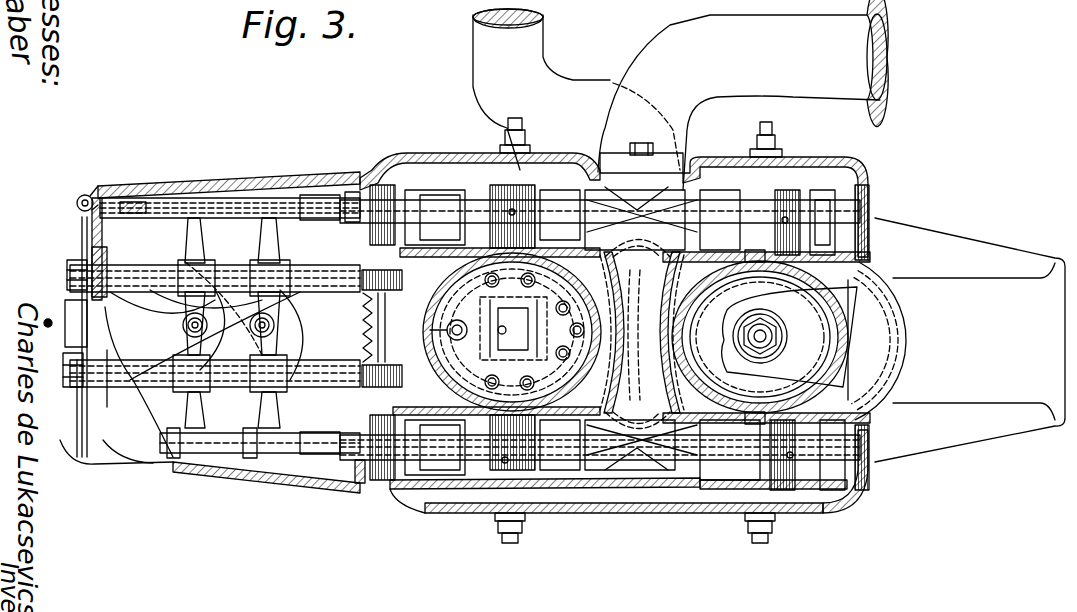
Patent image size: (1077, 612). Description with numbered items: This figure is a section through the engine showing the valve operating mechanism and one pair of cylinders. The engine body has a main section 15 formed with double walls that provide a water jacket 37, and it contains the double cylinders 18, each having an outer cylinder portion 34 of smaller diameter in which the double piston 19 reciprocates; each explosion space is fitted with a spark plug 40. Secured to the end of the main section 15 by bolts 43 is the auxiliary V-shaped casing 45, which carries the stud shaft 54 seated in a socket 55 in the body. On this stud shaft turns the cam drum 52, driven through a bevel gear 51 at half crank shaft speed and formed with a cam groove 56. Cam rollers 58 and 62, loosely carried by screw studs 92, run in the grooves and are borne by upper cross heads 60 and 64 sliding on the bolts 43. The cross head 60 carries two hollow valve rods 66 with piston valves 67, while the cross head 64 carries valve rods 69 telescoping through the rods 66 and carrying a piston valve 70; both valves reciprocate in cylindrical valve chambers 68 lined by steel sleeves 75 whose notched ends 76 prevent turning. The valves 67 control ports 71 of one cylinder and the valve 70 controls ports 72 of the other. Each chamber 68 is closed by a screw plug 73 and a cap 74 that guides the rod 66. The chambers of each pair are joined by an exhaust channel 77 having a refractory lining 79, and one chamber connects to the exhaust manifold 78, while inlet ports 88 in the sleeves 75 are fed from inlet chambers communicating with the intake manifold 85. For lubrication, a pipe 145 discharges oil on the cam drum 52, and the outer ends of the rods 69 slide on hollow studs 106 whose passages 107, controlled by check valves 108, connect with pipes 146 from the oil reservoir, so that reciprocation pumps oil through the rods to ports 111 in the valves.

The main portion or section 15 is at (852, 165).
The double cylinders 18 is at (774, 337).
The double piston 19 is at (775, 388).
The outer cylinder portion 34 is at (733, 340).
The water jacket 37 is at (460, 160).
The spark plug 40 is at (506, 130).
The bolts 43 is at (90, 268).
The auxiliary V-shaped casing 45 is at (202, 470).
The bevel gear 51 is at (160, 342).
The cam drum 52 is at (215, 382).
The stud shaft 54 is at (66, 305).
The socket 55 is at (414, 328).
The cam groove 56 is at (222, 272).
The cam roller 58 is at (276, 325).
The upper cross head 60 is at (274, 256).
The cam roller 62 is at (208, 316).
The upper cross head 64 is at (187, 238).
The hollow valve rods 66 is at (308, 197).
The piston valves 67 is at (522, 195).
The cylindrical valve chambers 68 is at (690, 195).
The valve rods 69 is at (225, 200).
The piston valve 70 is at (792, 220).
The ports 71 is at (510, 262).
The ports 72 is at (755, 263).
The screw plug or cap 73 is at (870, 205).
The screw plug or cap 74 is at (385, 190).
The steel liners or sleeves 75 is at (563, 195).
The notched ends 76 is at (616, 155).
The exhaust channel or passage 77 is at (742, 362).
The exhaust manifold 78 is at (650, 52).
The lining 79 is at (663, 272).
The intake manifold 85 is at (560, 85).
The inlet ports 88 is at (430, 192).
The screw studs 92 is at (274, 320).
The hollow studs 106 is at (145, 202).
The passages 107 is at (87, 195).
The check valves 108 is at (77, 205).
The ports 111 is at (512, 208).
The pipe 145 is at (29, 329).
The pipes 146 is at (80, 226).